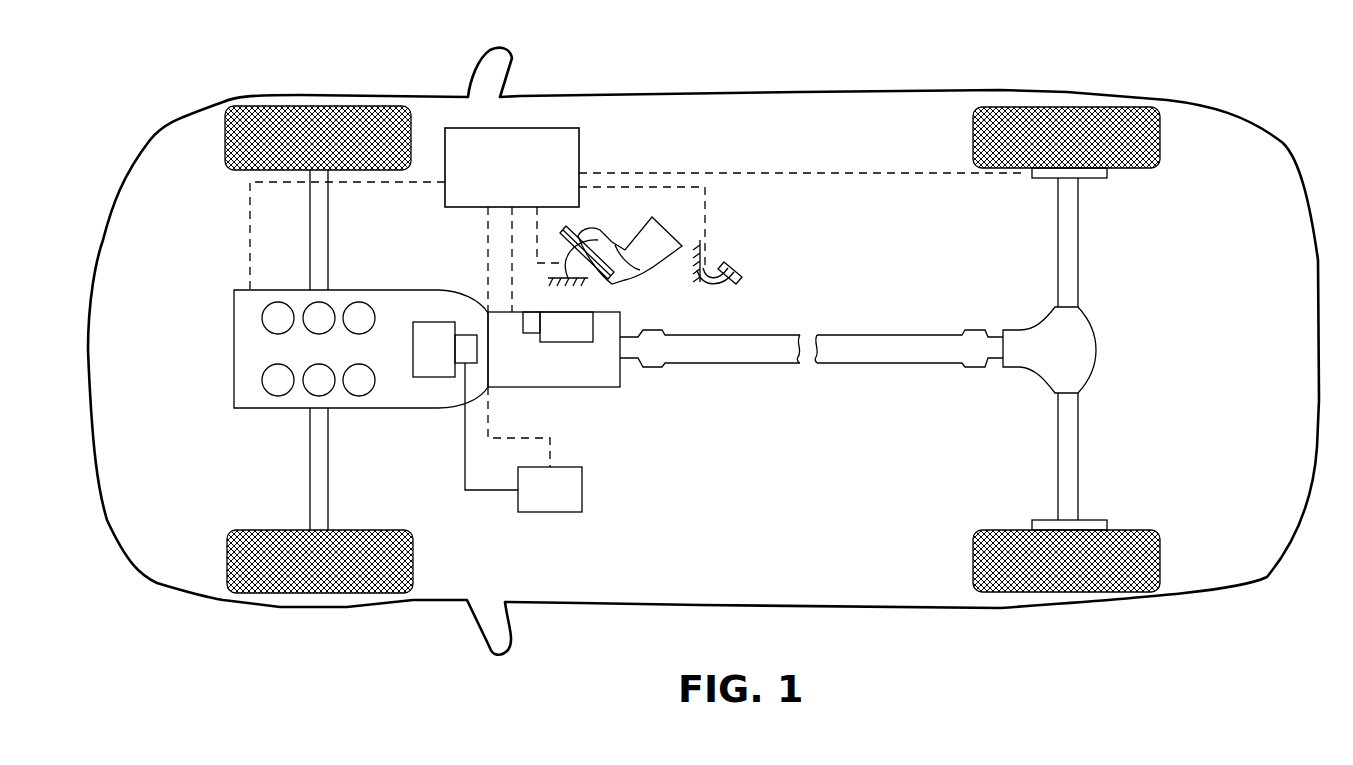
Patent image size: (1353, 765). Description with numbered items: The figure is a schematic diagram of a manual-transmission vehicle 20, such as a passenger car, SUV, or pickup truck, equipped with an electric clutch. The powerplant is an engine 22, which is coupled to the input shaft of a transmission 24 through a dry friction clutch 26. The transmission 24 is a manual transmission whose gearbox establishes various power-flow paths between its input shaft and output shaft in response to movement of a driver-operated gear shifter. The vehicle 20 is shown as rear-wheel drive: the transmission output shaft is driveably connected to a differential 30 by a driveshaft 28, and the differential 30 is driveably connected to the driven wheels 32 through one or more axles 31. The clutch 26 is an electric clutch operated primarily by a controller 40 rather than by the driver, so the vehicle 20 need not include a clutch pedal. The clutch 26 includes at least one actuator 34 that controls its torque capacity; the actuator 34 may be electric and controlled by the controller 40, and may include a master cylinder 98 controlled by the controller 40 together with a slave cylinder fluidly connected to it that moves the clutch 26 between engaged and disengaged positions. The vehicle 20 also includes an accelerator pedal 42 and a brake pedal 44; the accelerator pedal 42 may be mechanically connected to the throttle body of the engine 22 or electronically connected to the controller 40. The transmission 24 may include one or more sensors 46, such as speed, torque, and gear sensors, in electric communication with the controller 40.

The vehicle 20 is at (737, 92).
The engine 22 is at (381, 290).
The transmission 24 is at (545, 388).
The dry friction clutch 26 is at (434, 349).
The driveshaft 28 is at (727, 365).
The differential 30 is at (1096, 348).
The axle 31 is at (1080, 287).
The driven wheels 32 is at (1160, 142).
The actuator 34 is at (465, 335).
The controller 40 is at (513, 128).
The accelerator pedal 42 is at (600, 278).
The brake pedal 44 is at (722, 285).
The sensors 46 is at (555, 342).
The master cylinder 98 is at (523, 437).